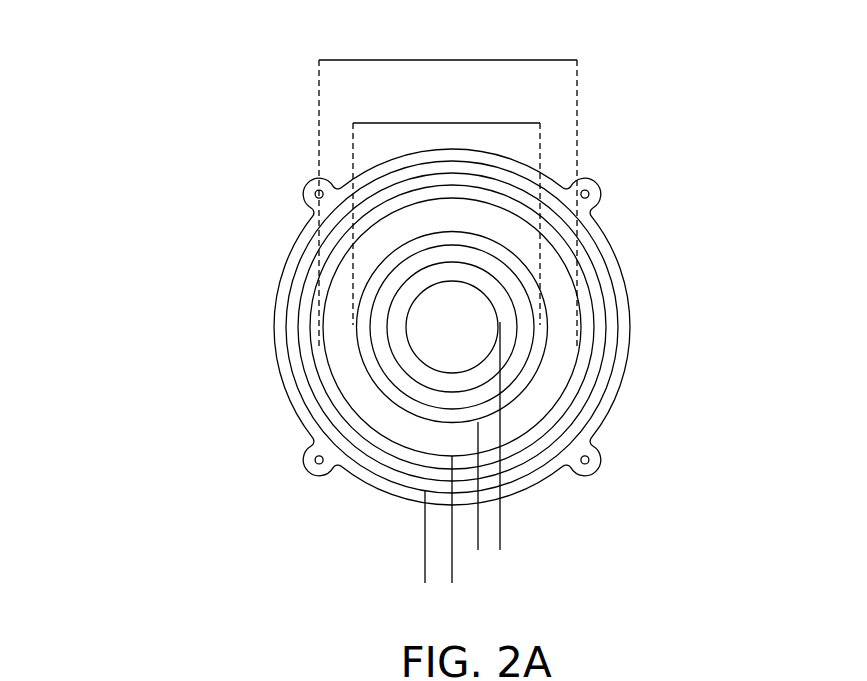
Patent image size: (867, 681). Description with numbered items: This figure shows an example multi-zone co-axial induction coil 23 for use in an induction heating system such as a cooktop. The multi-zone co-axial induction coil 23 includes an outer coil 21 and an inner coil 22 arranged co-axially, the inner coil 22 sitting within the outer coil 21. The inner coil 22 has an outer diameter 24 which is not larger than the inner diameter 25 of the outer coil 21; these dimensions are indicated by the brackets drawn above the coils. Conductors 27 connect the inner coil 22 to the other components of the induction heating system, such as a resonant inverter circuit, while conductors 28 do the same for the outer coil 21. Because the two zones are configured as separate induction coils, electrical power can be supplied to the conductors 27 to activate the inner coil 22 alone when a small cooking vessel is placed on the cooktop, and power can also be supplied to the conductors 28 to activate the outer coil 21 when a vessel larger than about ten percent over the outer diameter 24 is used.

The outer coil 21 is at (277, 343).
The inner coil 22 is at (549, 348).
The multi-zone co-axial induction coil 23 is at (166, 137).
The outer diameter 24 is at (427, 111).
The inner diameter 25 is at (470, 48).
The conductors 27 is at (471, 570).
The conductors 28 is at (459, 600).